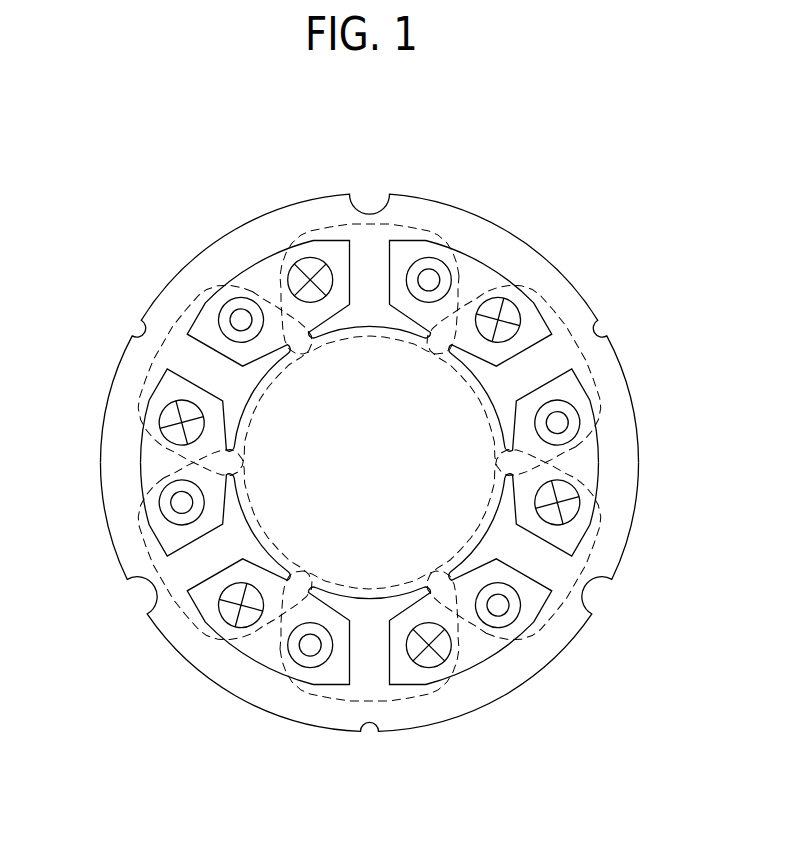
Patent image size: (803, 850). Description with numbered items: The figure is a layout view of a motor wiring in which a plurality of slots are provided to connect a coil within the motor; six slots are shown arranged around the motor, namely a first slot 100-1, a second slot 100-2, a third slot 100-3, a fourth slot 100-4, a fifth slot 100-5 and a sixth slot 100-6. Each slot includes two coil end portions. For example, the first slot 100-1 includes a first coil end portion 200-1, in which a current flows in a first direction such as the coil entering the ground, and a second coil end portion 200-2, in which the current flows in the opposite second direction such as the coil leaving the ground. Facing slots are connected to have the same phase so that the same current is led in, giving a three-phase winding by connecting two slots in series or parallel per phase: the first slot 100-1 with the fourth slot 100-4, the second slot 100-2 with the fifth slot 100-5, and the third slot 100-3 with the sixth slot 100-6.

The first slot 100-1 is at (398, 224).
The second slot 100-2 is at (167, 318).
The third slot 100-3 is at (140, 543).
The fourth slot 100-4 is at (336, 718).
The fifth slot 100-5 is at (583, 621).
The sixth slot 100-6 is at (595, 390).
The first coil end portion 200-1 is at (308, 257).
The second coil end portion 200-2 is at (428, 257).